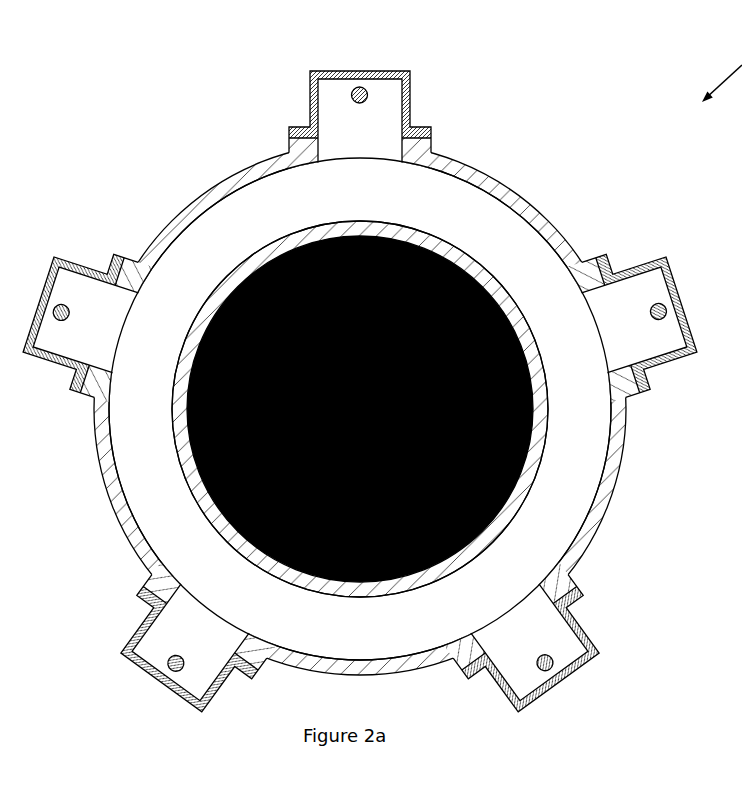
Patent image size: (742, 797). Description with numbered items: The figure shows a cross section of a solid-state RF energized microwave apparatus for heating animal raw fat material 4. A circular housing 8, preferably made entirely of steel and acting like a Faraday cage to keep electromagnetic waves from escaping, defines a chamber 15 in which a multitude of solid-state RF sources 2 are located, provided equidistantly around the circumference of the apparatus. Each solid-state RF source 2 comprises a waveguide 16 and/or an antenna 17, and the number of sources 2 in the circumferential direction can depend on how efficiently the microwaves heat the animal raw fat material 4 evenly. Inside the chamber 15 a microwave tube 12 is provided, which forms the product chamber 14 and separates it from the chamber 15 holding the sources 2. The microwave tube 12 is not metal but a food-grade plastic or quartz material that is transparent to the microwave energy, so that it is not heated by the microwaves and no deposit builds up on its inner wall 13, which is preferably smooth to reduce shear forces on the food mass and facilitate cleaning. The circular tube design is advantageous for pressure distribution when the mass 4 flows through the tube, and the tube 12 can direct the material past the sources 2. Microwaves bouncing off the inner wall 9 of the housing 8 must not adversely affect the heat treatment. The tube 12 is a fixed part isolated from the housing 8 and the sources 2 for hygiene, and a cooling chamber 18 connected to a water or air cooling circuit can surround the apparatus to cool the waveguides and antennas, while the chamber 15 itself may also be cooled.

The solid-state RF source 2 is at (279, 65).
The animal raw fat material 4 is at (279, 242).
The housing 8 is at (165, 230).
The inner wall 9 is at (201, 195).
The microwave tube 12 is at (420, 242).
The inner wall 13 is at (454, 252).
The product chamber 14 is at (484, 282).
The chamber 15 is at (537, 285).
The waveguide 16 is at (336, 71).
The antenna 17 is at (360, 92).
The cooling chamber 18 is at (408, 620).